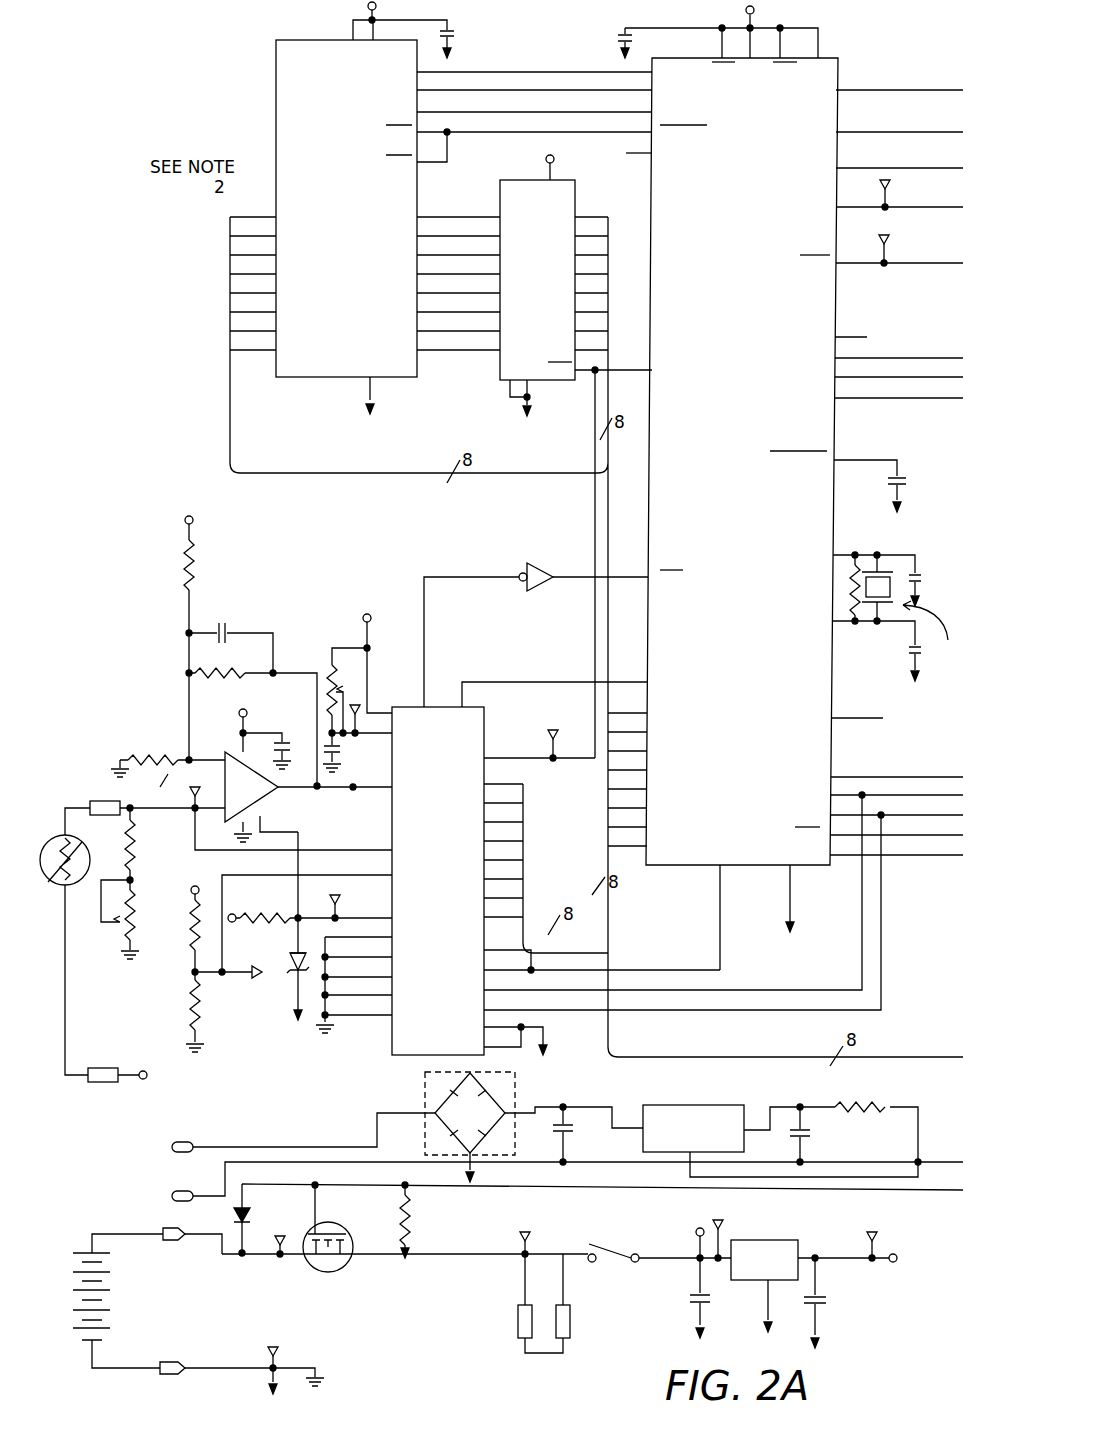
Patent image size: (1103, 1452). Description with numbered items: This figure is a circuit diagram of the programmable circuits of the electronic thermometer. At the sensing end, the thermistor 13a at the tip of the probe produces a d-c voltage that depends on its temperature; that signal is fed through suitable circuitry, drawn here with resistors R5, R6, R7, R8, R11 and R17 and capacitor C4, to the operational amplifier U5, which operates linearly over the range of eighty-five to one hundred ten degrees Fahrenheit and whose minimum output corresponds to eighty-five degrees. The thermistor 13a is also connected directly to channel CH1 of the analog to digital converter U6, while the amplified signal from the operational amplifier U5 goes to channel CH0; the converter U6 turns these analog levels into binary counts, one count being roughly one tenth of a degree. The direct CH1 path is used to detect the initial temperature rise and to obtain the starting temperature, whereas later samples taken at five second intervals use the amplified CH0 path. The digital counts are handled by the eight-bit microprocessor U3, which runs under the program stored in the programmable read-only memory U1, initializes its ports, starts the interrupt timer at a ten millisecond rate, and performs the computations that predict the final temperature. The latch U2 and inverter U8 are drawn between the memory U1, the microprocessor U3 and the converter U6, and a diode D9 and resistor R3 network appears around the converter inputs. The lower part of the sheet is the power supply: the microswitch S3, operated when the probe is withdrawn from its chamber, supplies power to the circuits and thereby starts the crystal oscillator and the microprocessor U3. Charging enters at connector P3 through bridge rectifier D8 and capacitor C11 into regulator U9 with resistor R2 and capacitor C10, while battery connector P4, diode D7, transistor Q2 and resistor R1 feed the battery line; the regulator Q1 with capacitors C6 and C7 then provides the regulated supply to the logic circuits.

The thermistor 13a is at (62, 838).
The programmable read-only memory U1 is at (441, 208).
The 74C373 latch U2 is at (577, 279).
The microprocessor U3 is at (713, 485).
The operational amplifier U5 is at (282, 797).
The analog to digital converter U6 is at (598, 870).
The CD4069 inverter U8 is at (536, 622).
The LM317L regulator U9 is at (780, 1130).
The LM2931AZ5.0 regulator Q1 is at (811, 1260).
The IRFD9123 MOSFET Q2 is at (392, 1240).
The 1N914 diode D7 is at (269, 1220).
The VM18 bridge rectifier D8 is at (457, 1124).
The LM385-1.2 reference D9 is at (315, 953).
The 47K resistor R1 is at (420, 1220).
The 68 ohm resistor R2 is at (866, 1103).
The 10.0K resistor network R3 is at (269, 930).
The 8.45K resistor R5 is at (203, 630).
The 8.45K resistor R6 is at (168, 752).
The 5.76K resistor R7 is at (157, 886).
The 23.7K resistor R8 is at (253, 728).
The 1K trimmer R11 is at (102, 946).
The 500 ohm trimmer R17 is at (356, 679).
The .1UF capacitor C4 is at (229, 640).
The .1 capacitor C6 is at (687, 1281).
The 10.0 capacitor C7 is at (850, 1301).
The 0.1U capacitor C10 is at (819, 1134).
The 1.0U capacitor C11 is at (574, 1134).
The charge connector P3 is at (528, 1157).
The battery connector P4 is at (198, 1299).
The microswitch S3 is at (617, 1290).